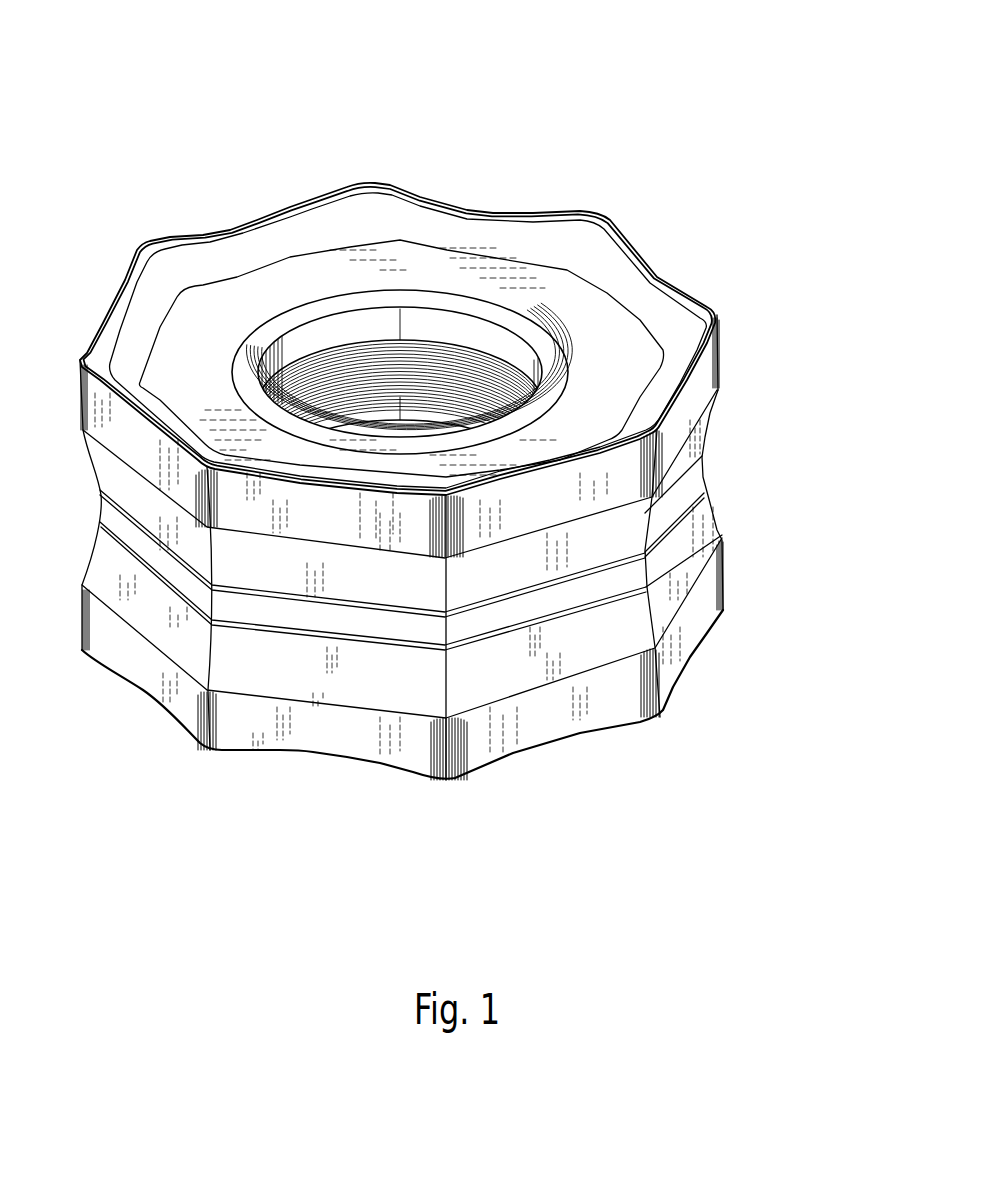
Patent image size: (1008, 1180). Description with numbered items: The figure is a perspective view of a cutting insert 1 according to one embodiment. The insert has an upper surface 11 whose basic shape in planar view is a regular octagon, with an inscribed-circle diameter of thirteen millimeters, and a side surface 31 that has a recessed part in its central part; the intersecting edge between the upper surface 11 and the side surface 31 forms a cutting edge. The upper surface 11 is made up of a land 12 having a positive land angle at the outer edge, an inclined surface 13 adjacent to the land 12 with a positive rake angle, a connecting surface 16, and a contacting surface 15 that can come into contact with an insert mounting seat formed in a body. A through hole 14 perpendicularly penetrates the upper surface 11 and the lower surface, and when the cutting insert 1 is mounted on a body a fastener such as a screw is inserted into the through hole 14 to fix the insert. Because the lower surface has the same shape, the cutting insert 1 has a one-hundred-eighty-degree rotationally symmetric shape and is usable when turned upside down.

The cutting insert 1 is at (531, 72).
The upper surface 11 is at (460, 421).
The land 12 is at (717, 314).
The inclined surface 13 is at (312, 213).
The through hole 14 is at (427, 360).
The contacting surface 15 is at (513, 273).
The connecting surface 16 is at (427, 231).
The side surface 31 is at (728, 451).